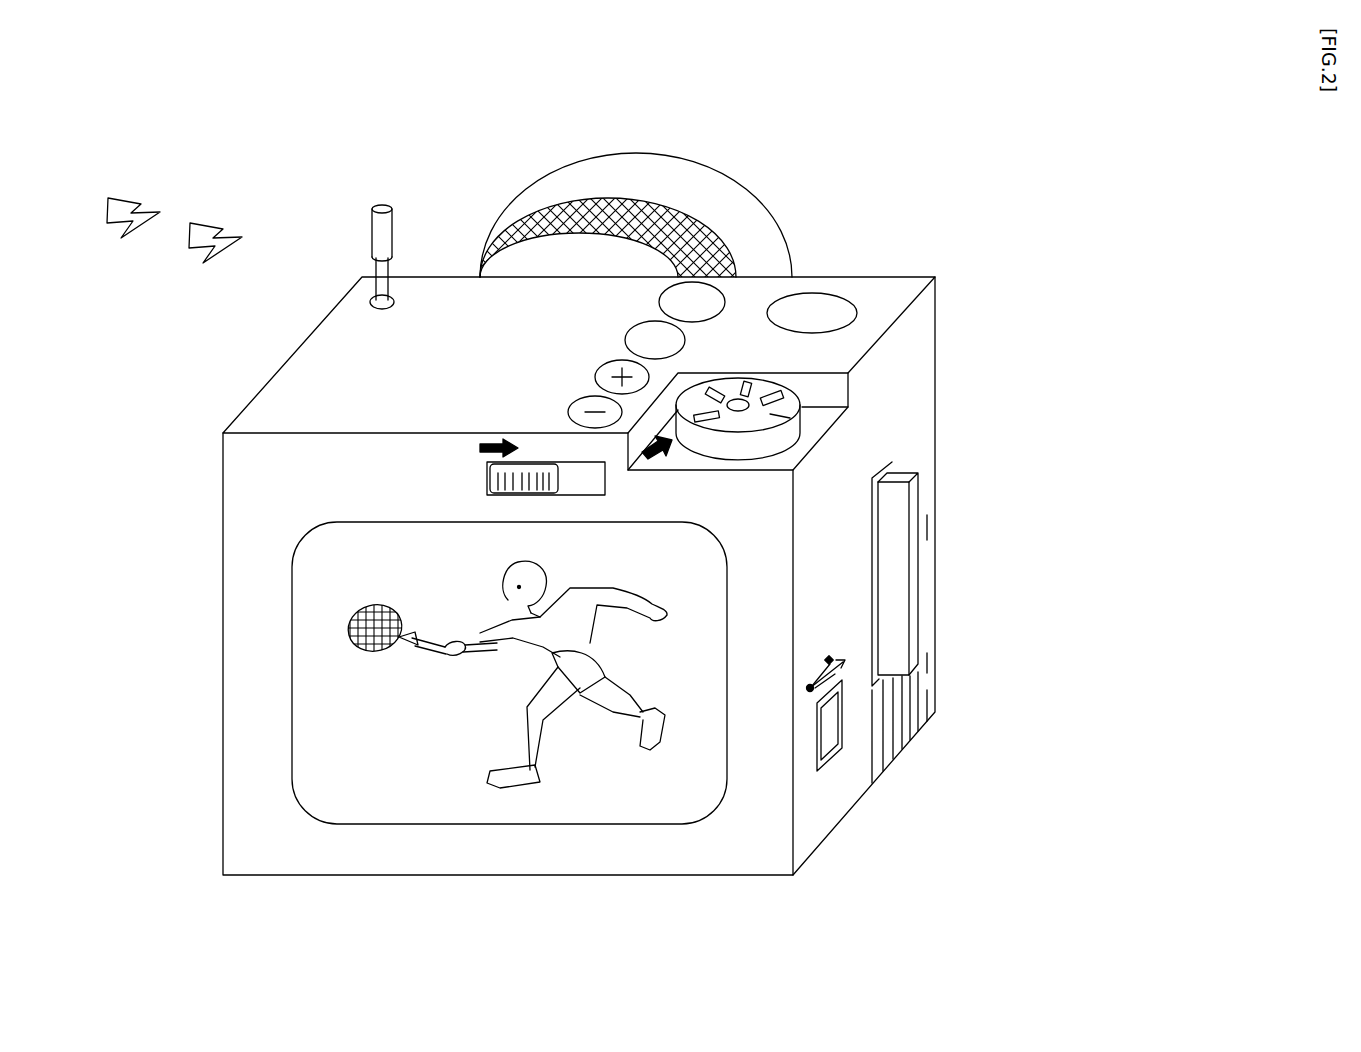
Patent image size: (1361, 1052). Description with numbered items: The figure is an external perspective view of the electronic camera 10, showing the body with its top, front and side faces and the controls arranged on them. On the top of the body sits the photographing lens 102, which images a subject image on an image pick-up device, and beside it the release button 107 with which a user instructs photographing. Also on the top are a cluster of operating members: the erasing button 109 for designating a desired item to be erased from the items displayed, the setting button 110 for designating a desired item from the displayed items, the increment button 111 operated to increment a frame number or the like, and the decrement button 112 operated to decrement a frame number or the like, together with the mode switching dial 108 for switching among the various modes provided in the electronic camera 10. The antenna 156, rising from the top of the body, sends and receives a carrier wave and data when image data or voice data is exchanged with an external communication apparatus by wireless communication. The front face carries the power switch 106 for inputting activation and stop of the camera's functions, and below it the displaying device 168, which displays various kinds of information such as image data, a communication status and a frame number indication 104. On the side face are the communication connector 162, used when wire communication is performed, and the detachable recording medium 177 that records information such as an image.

The electronic camera 10 is at (963, 360).
The photographing lens 102 is at (712, 200).
The frame number indication 104 is at (437, 525).
The power switch 106 is at (477, 475).
The release button 107 is at (830, 315).
The mode switching dial 108 is at (770, 415).
The erasing button 109 is at (728, 303).
The setting button 110 is at (617, 322).
The increment button 111 is at (588, 368).
The decrement button 112 is at (555, 408).
The antenna 156 is at (375, 237).
The communication connector 162 is at (827, 757).
The displaying device 168 is at (330, 718).
The detachable recording medium 177 is at (887, 566).